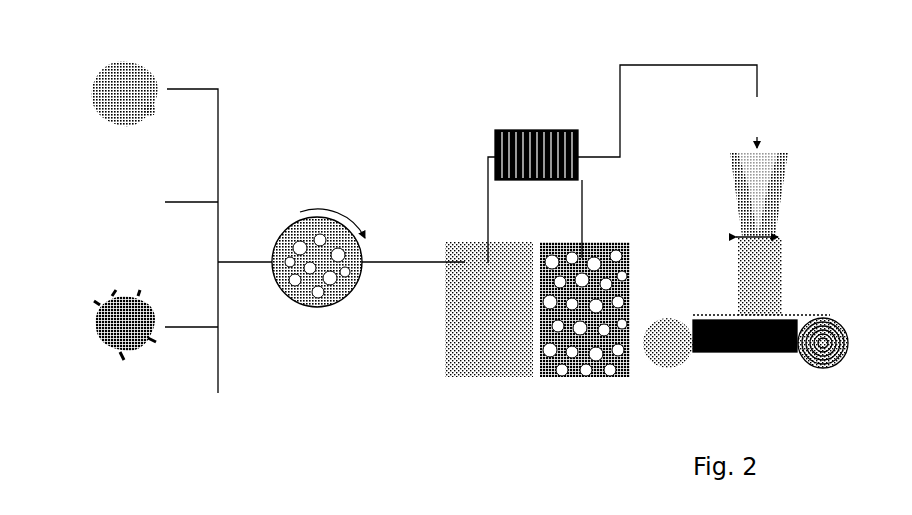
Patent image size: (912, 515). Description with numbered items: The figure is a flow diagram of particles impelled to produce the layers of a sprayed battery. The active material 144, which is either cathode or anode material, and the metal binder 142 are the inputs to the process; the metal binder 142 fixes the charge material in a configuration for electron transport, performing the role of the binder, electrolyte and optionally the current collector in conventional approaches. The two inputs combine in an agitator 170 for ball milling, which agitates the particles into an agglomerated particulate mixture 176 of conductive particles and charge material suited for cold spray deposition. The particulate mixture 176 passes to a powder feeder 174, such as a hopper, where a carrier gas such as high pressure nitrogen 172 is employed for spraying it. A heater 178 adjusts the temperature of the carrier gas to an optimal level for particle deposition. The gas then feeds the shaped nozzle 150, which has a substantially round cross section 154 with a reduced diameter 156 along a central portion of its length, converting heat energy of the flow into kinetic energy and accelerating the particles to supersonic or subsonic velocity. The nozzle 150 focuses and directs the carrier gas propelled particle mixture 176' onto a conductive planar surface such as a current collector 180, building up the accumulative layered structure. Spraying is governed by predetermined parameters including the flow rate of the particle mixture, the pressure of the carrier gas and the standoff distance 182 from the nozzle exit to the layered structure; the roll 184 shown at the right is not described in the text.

The metal binder 142 is at (96, 335).
The active material 144 is at (96, 89).
The nozzle 150 is at (780, 185).
The round cross section 154 is at (775, 235).
The reduced diameter 156 is at (724, 194).
The agitator 170 is at (356, 288).
The high pressure nitrogen 172 is at (505, 362).
The powder feeder 174 is at (607, 375).
The particulate mixture 176 is at (644, 262).
The carrier gas propelled particle mixture 176' is at (788, 277).
The heater 178 is at (495, 143).
The current collector 180 is at (692, 318).
The standoff distance 182 is at (728, 304).
The take-up roll 184 is at (818, 309).